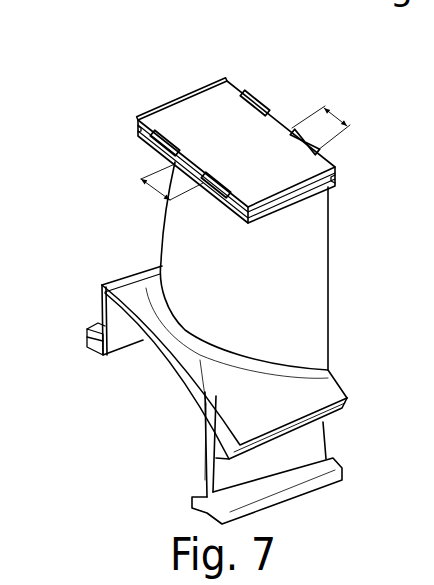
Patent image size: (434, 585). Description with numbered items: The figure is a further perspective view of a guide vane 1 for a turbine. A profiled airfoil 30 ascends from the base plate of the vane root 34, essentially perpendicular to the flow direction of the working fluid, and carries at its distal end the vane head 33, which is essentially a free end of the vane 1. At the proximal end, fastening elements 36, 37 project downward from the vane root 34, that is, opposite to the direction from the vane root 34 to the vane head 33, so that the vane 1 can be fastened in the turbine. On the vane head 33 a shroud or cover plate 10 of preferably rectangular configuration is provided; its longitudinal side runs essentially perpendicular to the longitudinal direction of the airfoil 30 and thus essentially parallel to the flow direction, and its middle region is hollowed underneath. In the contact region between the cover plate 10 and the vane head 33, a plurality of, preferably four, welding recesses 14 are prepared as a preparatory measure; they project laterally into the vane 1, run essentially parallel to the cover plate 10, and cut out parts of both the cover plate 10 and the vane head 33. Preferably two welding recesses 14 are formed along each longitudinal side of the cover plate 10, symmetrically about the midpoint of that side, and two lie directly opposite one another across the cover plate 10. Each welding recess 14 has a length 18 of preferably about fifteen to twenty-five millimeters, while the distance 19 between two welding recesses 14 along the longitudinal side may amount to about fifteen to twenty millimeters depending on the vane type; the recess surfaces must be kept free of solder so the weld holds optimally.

The guide vane 1 is at (147, 82).
The cover plate 10 is at (140, 113).
The welding recesses 14 is at (212, 178).
The length 18 is at (338, 108).
The distance 19 is at (145, 181).
The airfoil 30 is at (315, 247).
The vane head 33 is at (332, 185).
The vane root 34 is at (317, 393).
The fastening element 36 is at (88, 346).
The fastening element 37 is at (310, 438).